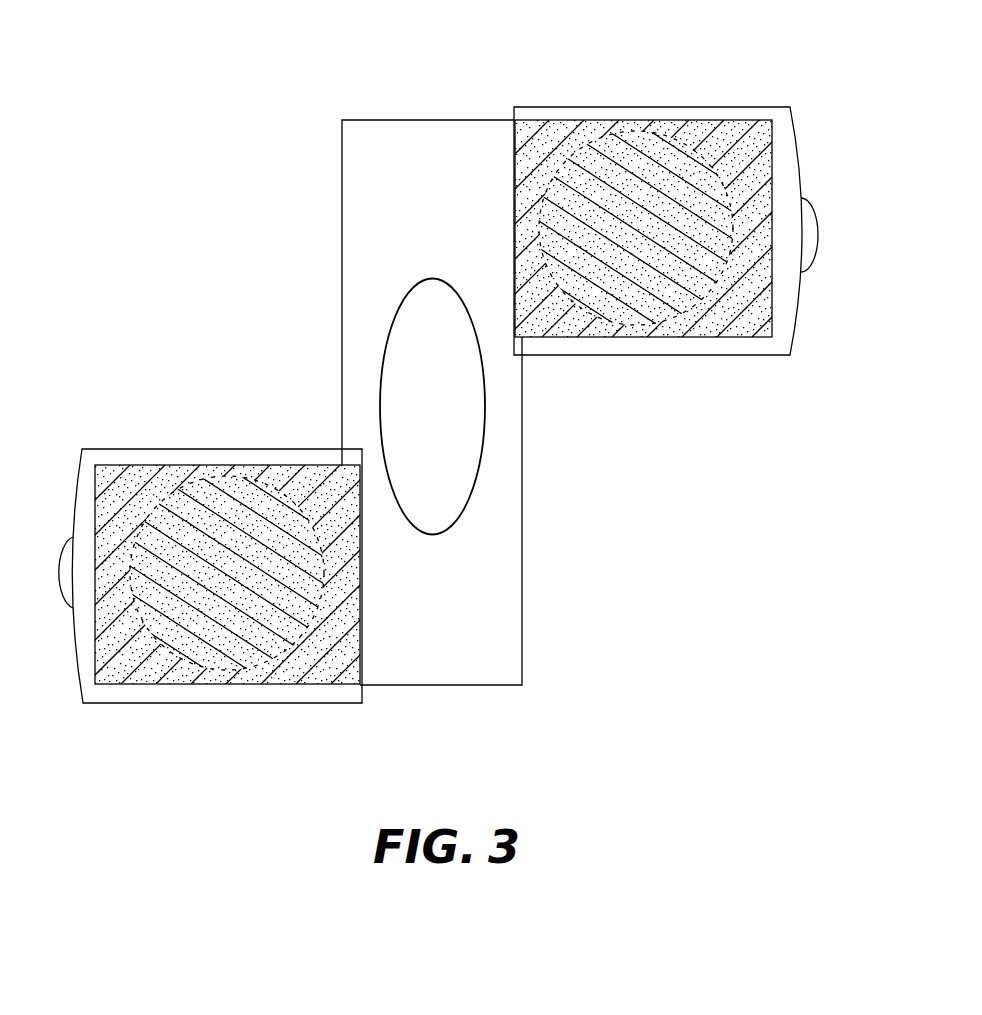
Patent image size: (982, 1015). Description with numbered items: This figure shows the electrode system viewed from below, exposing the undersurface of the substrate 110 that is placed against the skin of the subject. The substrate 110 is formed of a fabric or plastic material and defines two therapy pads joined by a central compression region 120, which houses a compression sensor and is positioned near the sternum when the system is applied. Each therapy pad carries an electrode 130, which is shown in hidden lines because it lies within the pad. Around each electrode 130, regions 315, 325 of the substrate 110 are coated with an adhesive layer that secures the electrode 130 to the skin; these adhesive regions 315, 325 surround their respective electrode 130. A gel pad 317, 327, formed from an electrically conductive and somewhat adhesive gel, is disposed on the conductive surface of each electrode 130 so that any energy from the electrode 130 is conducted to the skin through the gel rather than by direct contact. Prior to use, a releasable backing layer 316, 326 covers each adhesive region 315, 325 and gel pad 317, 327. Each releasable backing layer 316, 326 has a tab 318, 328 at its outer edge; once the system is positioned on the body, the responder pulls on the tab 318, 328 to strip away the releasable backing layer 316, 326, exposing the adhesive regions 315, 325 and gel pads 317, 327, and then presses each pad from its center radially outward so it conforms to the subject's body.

The substrate 110 is at (477, 628).
The compression region 120 is at (486, 430).
The electrode 130 is at (575, 130).
The adhesive region 315 is at (728, 131).
The releasable backing layer 316 is at (660, 107).
The gel pad 317 is at (622, 323).
The tab 318 is at (803, 268).
The adhesive region 325 is at (313, 667).
The releasable backing layer 326 is at (278, 449).
The gel pad 327 is at (243, 668).
The tab 328 is at (62, 606).